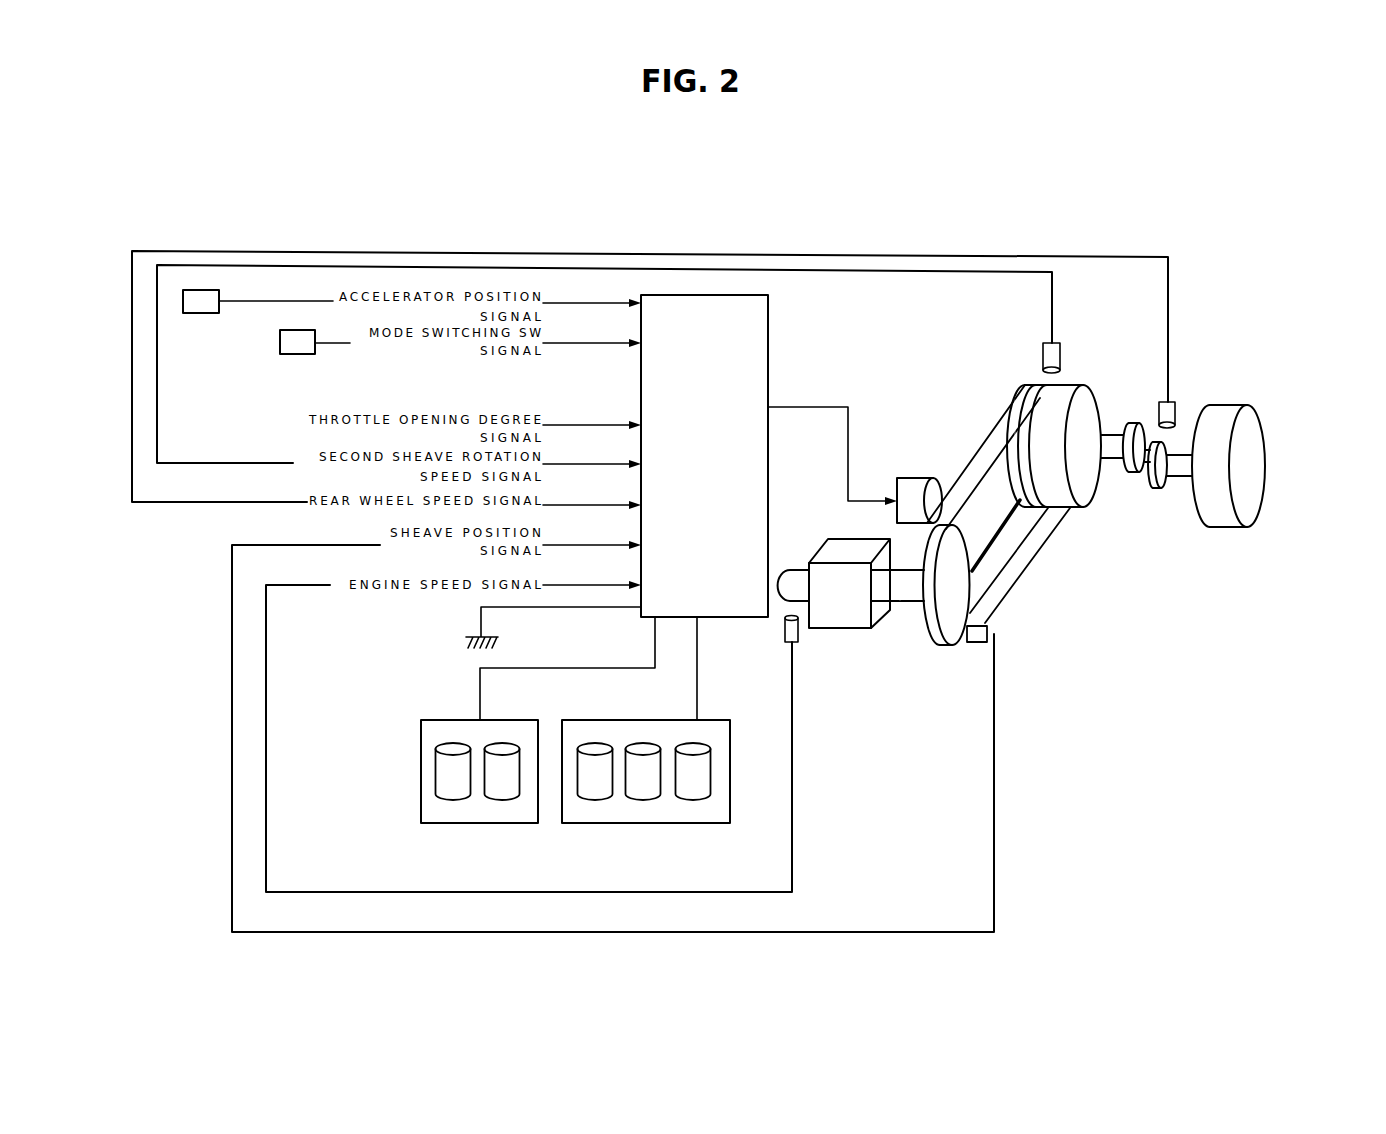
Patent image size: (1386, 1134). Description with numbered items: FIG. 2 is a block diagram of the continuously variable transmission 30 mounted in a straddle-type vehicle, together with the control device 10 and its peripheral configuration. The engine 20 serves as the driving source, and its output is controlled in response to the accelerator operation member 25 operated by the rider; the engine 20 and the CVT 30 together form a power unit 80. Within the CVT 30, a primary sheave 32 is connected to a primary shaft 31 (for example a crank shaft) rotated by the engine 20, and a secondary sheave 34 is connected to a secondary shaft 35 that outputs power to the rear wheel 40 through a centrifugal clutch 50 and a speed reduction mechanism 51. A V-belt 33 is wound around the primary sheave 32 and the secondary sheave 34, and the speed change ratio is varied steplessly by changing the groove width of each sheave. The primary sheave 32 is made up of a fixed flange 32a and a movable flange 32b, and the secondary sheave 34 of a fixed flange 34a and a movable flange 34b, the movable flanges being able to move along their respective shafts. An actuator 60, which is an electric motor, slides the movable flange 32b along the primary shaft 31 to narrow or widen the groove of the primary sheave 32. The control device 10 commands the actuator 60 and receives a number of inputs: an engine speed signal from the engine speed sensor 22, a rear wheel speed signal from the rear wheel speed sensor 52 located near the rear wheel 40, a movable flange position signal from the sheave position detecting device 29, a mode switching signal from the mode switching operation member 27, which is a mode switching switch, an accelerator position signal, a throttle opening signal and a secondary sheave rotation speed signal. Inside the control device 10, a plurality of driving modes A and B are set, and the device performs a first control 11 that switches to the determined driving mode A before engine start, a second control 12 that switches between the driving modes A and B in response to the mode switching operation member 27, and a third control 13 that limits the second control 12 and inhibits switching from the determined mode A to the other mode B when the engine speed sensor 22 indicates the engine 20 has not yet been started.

The control device 10 is at (768, 310).
The first control 11 is at (595, 797).
The second control 12 is at (643, 797).
The third control 13 is at (693, 797).
The determined driving mode A is at (453, 797).
The other driving mode B is at (502, 797).
The engine 20 is at (840, 628).
The engine speed sensor 22 is at (785, 633).
The accelerator operation member 25 is at (200, 313).
The mode switching operation member 27 is at (299, 330).
The sheave position detecting device 29 is at (987, 630).
The continuously variable transmission 30 is at (932, 697).
The primary shaft 31 is at (905, 600).
The primary sheave 32 is at (961, 644).
The fixed flange 32a is at (960, 648).
The movable flange 32b is at (942, 657).
The V-belt 33 is at (1018, 550).
The secondary sheave 34 is at (1050, 468).
The fixed flange 34a is at (1028, 437).
The movable flange 34b is at (1008, 462).
The secondary shaft 35 is at (1112, 455).
The rear wheel 40 is at (1262, 478).
The centrifugal clutch 50 is at (1096, 400).
The speed reduction mechanism 51 is at (1155, 490).
The rear wheel speed sensor 52 is at (1172, 410).
The actuator 60 is at (913, 478).
The power unit 80 is at (1060, 699).